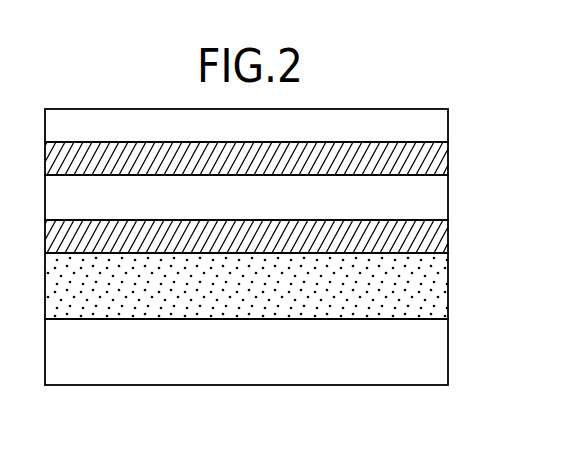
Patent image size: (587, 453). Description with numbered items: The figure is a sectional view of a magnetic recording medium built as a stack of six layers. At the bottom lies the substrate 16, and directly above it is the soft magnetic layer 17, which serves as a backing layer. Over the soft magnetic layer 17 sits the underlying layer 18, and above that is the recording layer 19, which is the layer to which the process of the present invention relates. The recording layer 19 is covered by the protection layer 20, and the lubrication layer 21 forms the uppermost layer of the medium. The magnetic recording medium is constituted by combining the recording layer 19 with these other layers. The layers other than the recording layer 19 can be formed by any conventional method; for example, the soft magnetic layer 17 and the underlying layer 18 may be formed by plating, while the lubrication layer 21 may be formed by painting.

The substrate 16 is at (441, 355).
The soft magnetic layer 17 is at (441, 290).
The underlying layer 18 is at (441, 240).
The recording layer 19 is at (441, 205).
The protection layer 20 is at (441, 164).
The lubrication layer 21 is at (441, 132).